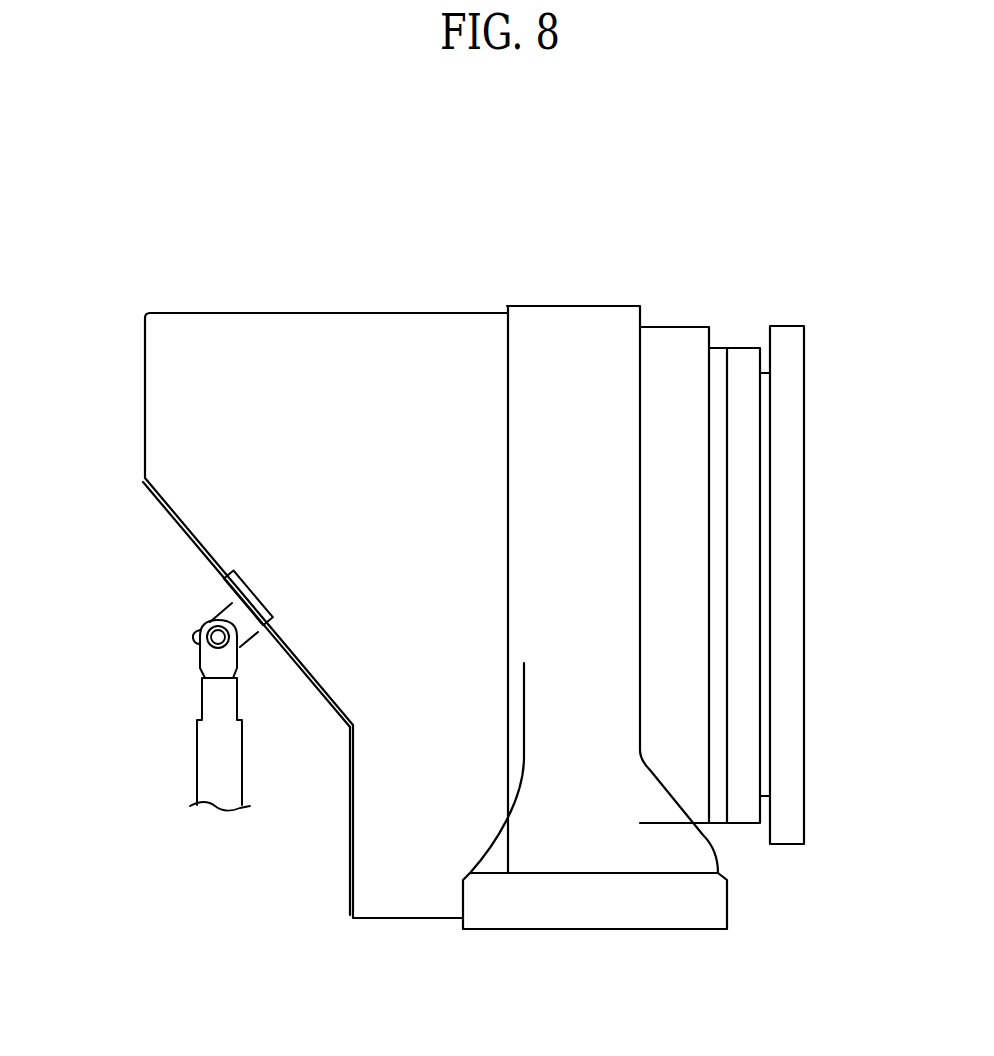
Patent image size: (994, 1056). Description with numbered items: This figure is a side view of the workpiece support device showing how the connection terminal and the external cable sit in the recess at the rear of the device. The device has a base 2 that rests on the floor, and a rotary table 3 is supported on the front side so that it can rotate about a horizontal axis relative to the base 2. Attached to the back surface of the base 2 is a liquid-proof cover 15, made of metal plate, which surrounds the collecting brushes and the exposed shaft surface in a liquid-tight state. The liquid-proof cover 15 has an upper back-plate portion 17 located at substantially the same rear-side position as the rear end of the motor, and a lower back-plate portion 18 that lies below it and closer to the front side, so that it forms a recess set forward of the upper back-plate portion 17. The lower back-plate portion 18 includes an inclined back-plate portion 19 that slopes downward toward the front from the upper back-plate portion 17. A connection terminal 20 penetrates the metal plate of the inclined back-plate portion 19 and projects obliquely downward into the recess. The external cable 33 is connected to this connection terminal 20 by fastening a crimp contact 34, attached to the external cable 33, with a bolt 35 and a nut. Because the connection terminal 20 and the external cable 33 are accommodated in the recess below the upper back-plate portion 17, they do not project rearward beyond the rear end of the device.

The base 2 is at (613, 915).
The rotary table 3 is at (830, 474).
The liquid-proof cover 15 is at (293, 292).
The upper back-plate portion 17 is at (145, 407).
The lower back-plate portion 18 is at (351, 858).
The inclined back-plate portion 19 is at (316, 687).
The connection terminal 20 is at (198, 636).
The external cable 33 is at (197, 758).
The crimp contact 34 is at (199, 660).
The bolt 35 is at (226, 629).